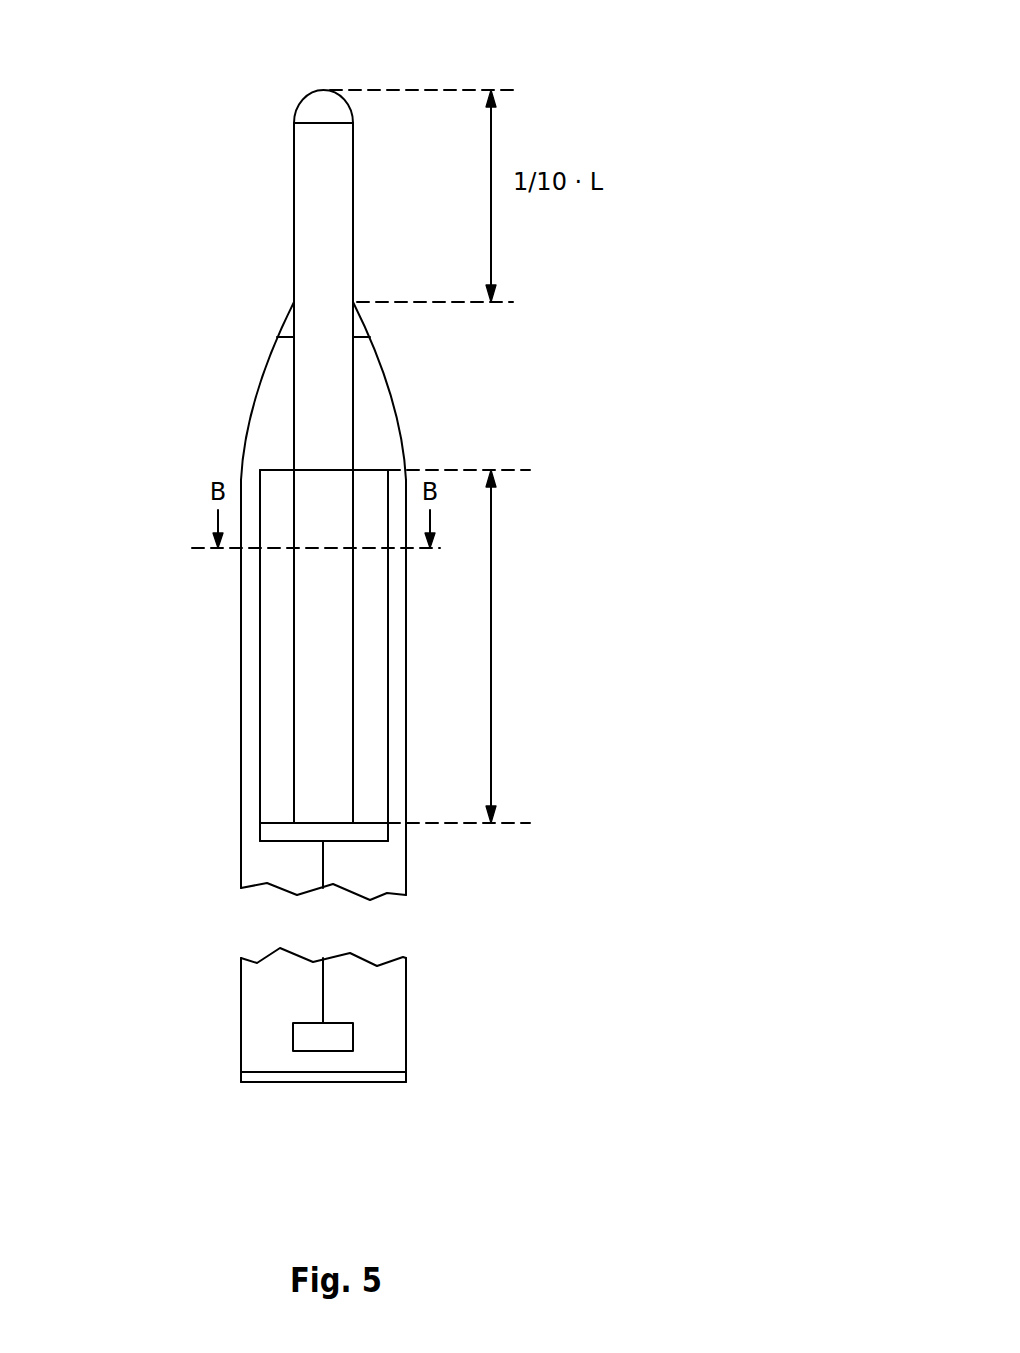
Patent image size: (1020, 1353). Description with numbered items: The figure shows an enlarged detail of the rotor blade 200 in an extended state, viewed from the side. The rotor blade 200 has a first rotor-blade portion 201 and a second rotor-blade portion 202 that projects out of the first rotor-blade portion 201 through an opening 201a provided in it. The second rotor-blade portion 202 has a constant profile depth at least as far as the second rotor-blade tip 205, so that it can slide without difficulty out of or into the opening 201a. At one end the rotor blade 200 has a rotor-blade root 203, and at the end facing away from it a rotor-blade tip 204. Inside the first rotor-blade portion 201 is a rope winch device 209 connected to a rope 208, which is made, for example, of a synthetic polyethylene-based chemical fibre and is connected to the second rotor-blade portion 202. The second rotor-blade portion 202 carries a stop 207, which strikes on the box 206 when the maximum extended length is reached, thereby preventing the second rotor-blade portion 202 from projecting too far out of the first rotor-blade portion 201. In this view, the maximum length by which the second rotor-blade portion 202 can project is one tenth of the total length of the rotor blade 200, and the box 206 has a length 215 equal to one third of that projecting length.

The rotor blade 200 is at (436, 585).
The first rotor-blade portion 201 is at (406, 740).
The opening 201a is at (293, 358).
The second rotor-blade portion 202 is at (335, 378).
The rotor-blade root 203 is at (383, 1083).
The rotor-blade tip 204 is at (288, 325).
The second rotor-blade tip 205 is at (320, 108).
The box 206 is at (280, 677).
The stop 207 is at (267, 830).
The rope 208 is at (325, 863).
The rope winch device 209 is at (300, 1037).
The length 215 is at (491, 637).